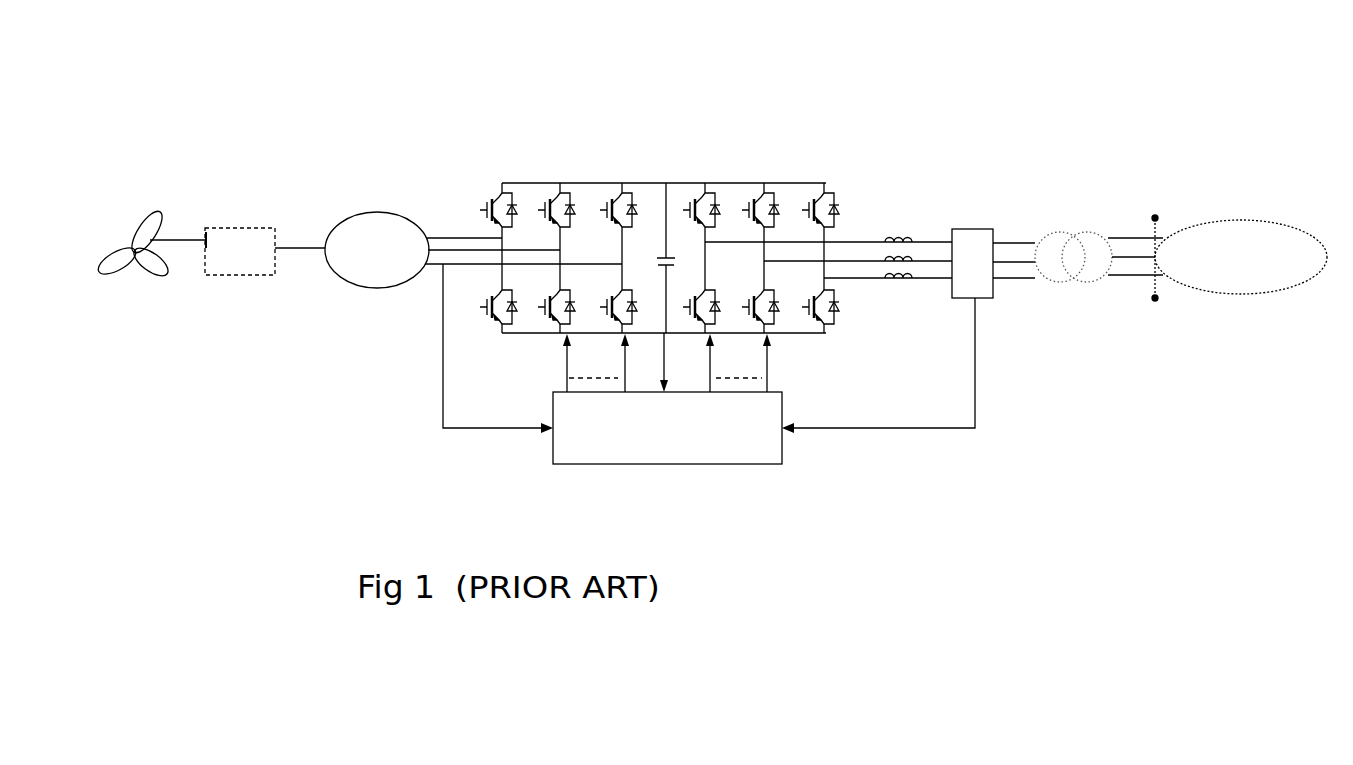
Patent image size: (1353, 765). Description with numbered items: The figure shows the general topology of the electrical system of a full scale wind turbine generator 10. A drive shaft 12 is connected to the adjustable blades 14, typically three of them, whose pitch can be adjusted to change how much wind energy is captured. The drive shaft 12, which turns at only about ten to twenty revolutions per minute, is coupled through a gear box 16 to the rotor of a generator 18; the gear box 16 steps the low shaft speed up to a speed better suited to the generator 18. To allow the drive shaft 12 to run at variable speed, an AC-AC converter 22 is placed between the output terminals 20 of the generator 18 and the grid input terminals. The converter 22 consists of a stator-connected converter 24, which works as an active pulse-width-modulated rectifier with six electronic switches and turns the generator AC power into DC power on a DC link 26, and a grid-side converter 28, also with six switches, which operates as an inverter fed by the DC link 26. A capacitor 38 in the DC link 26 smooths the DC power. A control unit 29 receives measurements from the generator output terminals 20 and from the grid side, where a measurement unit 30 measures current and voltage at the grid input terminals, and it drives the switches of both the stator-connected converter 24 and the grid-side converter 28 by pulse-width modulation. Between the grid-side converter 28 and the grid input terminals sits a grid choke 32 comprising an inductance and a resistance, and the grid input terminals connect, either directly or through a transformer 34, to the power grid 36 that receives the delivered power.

The wind turbine generator 10 is at (376, 62).
The drive shaft 12 is at (182, 252).
The adjustable blades 14 is at (163, 210).
The gear box 16 is at (240, 228).
The generator 18 is at (372, 213).
The output terminals 20 is at (437, 248).
The AC-AC converter 22 is at (716, 192).
The stator-connected converter 24 is at (540, 182).
The DC link 26 is at (664, 183).
The grid-side converter 28 is at (740, 182).
The control unit 29 is at (680, 465).
The measurement unit 30 is at (968, 229).
The grid choke 32 is at (893, 238).
The transformer 34 is at (1053, 232).
The power grid 36 is at (1235, 222).
The capacitor 38 is at (673, 262).